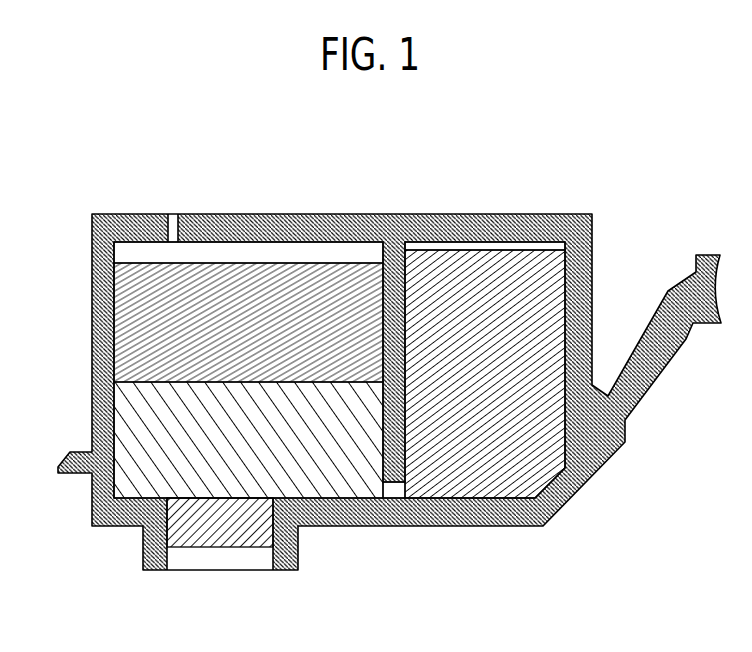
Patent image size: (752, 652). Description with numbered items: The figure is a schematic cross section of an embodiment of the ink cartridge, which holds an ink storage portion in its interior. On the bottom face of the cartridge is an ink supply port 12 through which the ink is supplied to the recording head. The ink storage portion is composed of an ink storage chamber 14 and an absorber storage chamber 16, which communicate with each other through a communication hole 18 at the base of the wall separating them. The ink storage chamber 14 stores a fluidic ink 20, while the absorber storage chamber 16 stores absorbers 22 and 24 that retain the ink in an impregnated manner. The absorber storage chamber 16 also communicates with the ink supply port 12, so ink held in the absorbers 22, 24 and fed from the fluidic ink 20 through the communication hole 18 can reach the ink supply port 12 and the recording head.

The ink supply port 12 is at (225, 560).
The ink storage chamber 14 is at (532, 248).
The absorber storage chamber 16 is at (232, 255).
The communication hole 18 is at (395, 493).
The fluidic ink 20 is at (513, 467).
The absorber 22 is at (133, 418).
The absorber 24 is at (163, 322).